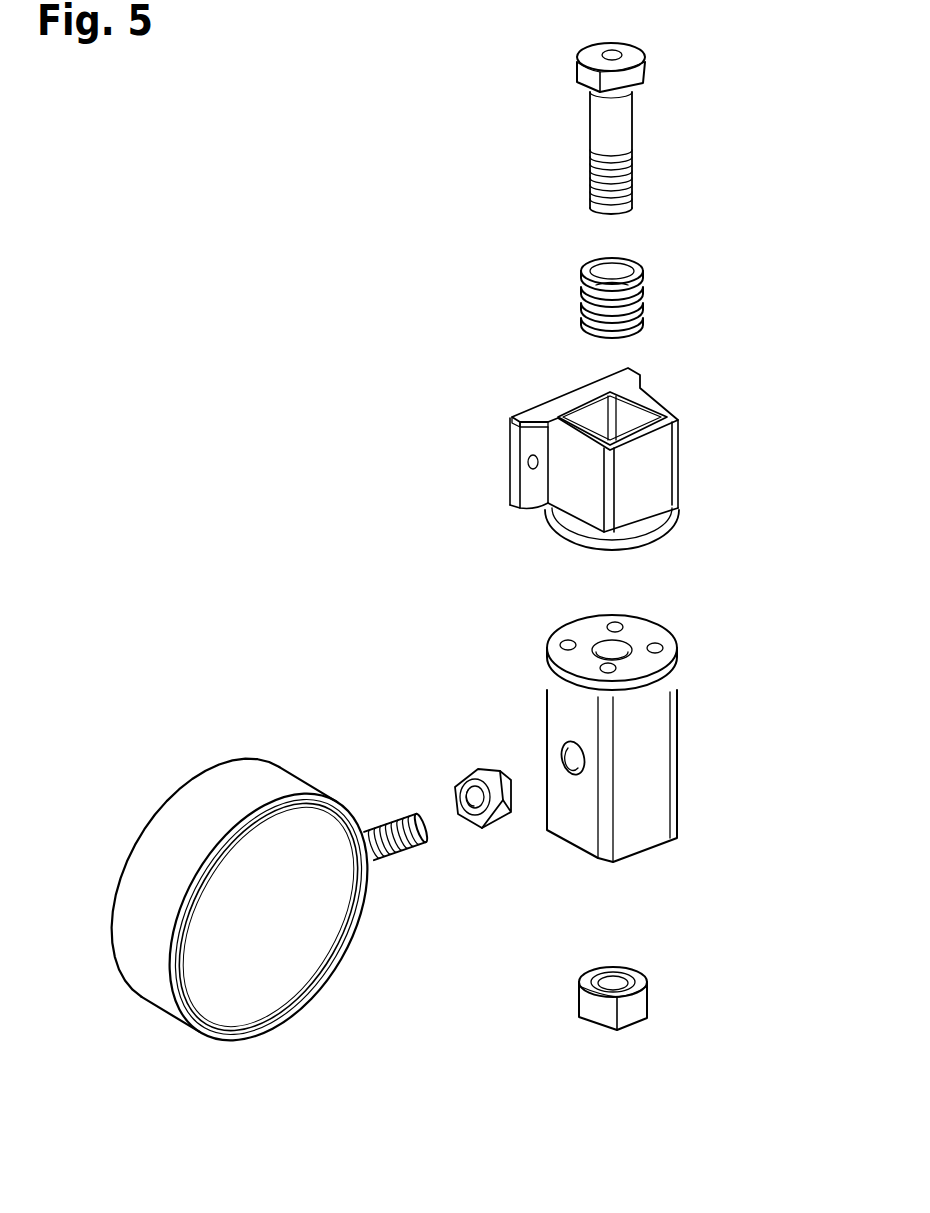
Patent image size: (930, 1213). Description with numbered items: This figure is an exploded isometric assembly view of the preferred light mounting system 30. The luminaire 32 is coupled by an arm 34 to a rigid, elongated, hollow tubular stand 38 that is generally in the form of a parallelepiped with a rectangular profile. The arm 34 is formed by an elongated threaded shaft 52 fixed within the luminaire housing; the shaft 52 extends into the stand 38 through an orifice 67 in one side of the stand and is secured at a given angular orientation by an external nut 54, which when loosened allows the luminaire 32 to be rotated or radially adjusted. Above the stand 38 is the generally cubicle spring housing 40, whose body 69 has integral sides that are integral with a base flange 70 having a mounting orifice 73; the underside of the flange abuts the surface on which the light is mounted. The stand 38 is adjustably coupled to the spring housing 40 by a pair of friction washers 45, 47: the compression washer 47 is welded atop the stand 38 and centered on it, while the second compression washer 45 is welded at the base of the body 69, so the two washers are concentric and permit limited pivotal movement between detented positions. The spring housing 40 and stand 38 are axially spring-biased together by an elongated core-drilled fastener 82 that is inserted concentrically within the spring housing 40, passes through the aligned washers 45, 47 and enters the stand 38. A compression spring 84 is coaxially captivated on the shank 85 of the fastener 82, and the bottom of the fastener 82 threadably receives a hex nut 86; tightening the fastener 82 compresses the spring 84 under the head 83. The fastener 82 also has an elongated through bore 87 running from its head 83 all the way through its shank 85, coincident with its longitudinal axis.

The light mounting system 30 is at (580, 477).
The luminaire 32 is at (148, 775).
The arm 34 is at (277, 878).
The stand 38 is at (618, 768).
The spring housing 40 is at (659, 476).
The friction washer 45 is at (650, 540).
The friction washer 47 is at (552, 645).
The threaded shaft 52 is at (387, 810).
The external nut 54 is at (493, 822).
The orifice 67 is at (575, 777).
The body 69 is at (658, 490).
The base flange 70 is at (575, 390).
The mounting orifice 73 is at (530, 470).
The fastener 82 is at (583, 118).
The head 83 is at (592, 57).
The compression spring 84 is at (588, 272).
The shank 85 is at (592, 181).
The hex nut 86 is at (580, 998).
The through bore 87 is at (617, 53).